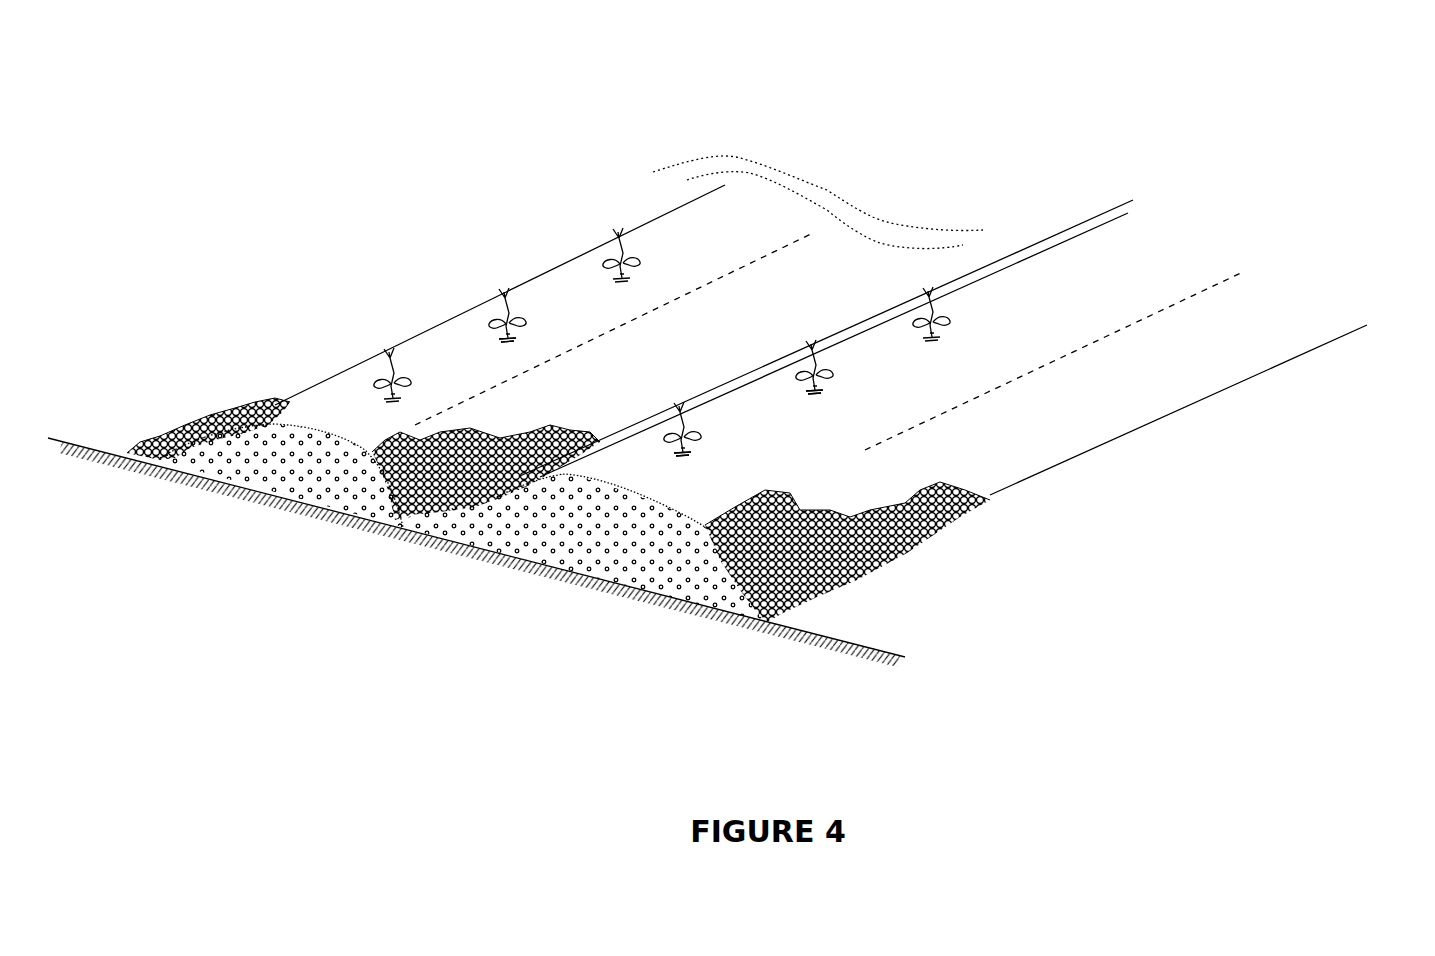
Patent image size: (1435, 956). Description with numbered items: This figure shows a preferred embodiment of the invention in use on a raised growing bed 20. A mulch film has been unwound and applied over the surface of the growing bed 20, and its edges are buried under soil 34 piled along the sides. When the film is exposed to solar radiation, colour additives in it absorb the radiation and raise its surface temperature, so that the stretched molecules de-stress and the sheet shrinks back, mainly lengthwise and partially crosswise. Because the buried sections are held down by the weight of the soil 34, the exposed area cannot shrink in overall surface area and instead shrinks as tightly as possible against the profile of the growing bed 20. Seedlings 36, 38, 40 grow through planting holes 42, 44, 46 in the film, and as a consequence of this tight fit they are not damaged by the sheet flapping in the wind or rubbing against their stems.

The raised growing bed 20 is at (623, 548).
The soil 34 is at (184, 432).
The seedling 36 is at (490, 290).
The seedling 38 is at (680, 408).
The seedling 40 is at (808, 345).
The planting hole 42 is at (517, 335).
The planting hole 44 is at (695, 452).
The planting hole 46 is at (835, 386).